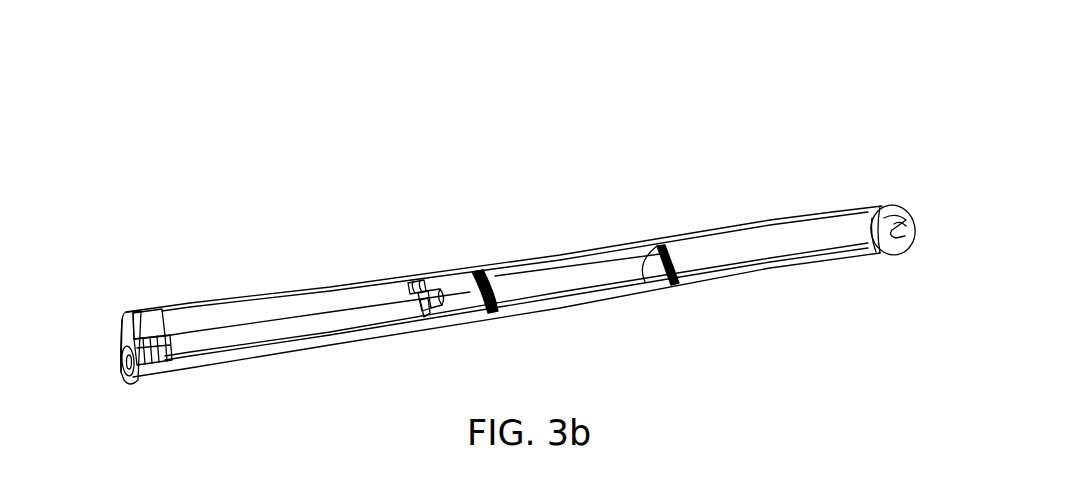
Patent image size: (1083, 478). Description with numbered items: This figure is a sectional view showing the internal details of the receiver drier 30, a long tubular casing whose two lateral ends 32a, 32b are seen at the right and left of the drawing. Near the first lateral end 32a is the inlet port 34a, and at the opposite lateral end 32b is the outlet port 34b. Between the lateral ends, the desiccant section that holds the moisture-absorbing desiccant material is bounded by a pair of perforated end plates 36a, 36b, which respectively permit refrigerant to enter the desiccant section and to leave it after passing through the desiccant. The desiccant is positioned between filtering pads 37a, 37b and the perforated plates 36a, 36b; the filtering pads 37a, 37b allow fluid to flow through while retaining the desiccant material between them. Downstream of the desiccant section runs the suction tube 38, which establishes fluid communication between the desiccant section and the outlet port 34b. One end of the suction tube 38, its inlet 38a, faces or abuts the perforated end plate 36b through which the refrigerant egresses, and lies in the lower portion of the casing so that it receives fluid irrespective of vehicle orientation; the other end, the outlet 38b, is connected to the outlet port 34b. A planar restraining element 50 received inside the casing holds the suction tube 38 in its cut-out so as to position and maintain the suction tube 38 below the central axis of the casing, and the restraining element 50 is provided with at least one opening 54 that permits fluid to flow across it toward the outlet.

The receiver drier 30 is at (714, 112).
The suction tube 38 is at (303, 325).
The first lateral end 32a is at (885, 242).
The second lateral end 32b is at (123, 330).
The inlet port 34a is at (892, 228).
The outlet port 34b is at (127, 357).
The inlet of the suction tube 38a is at (437, 296).
The outlet of the suction tube 38b is at (177, 347).
The restraining element 50 is at (412, 281).
The opening 54 is at (423, 304).
The perforated end plate 36a is at (674, 262).
The perforated end plate 36b is at (476, 274).
The filtering pad 37a is at (650, 270).
The filtering pad 37b is at (494, 282).